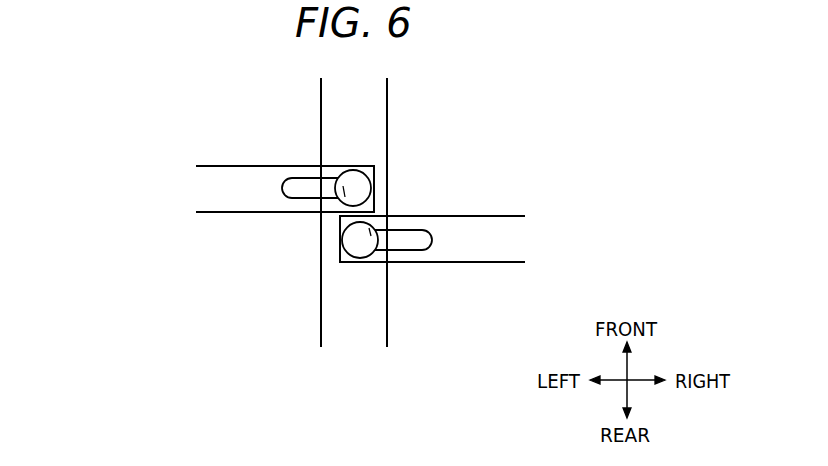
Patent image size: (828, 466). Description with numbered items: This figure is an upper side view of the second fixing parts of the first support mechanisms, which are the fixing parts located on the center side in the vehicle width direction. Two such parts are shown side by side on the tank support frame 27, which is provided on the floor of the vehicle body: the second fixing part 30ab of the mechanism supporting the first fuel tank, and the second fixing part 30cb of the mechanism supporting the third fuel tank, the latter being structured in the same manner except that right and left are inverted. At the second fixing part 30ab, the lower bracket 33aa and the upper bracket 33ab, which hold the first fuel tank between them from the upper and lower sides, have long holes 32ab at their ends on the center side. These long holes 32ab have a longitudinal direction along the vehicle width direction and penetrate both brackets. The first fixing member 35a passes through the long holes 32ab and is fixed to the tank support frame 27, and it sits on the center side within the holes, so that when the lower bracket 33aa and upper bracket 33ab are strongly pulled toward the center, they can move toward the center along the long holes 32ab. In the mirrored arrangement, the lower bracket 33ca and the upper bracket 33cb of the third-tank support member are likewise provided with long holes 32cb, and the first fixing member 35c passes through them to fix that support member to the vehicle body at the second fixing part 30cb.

The tank support frame 27 is at (365, 318).
The second fixing part 30cb is at (304, 152).
The second fixing part 30ab is at (409, 270).
The long holes 32cb is at (318, 213).
The long holes 32ab is at (385, 214).
The lower bracket 33ca is at (189, 156).
The upper bracket 33cb is at (225, 165).
The lower bracket 33aa is at (498, 254).
The upper bracket 33ab is at (492, 262).
The first fixing member 35c is at (313, 187).
The first fixing member 35a is at (402, 240).